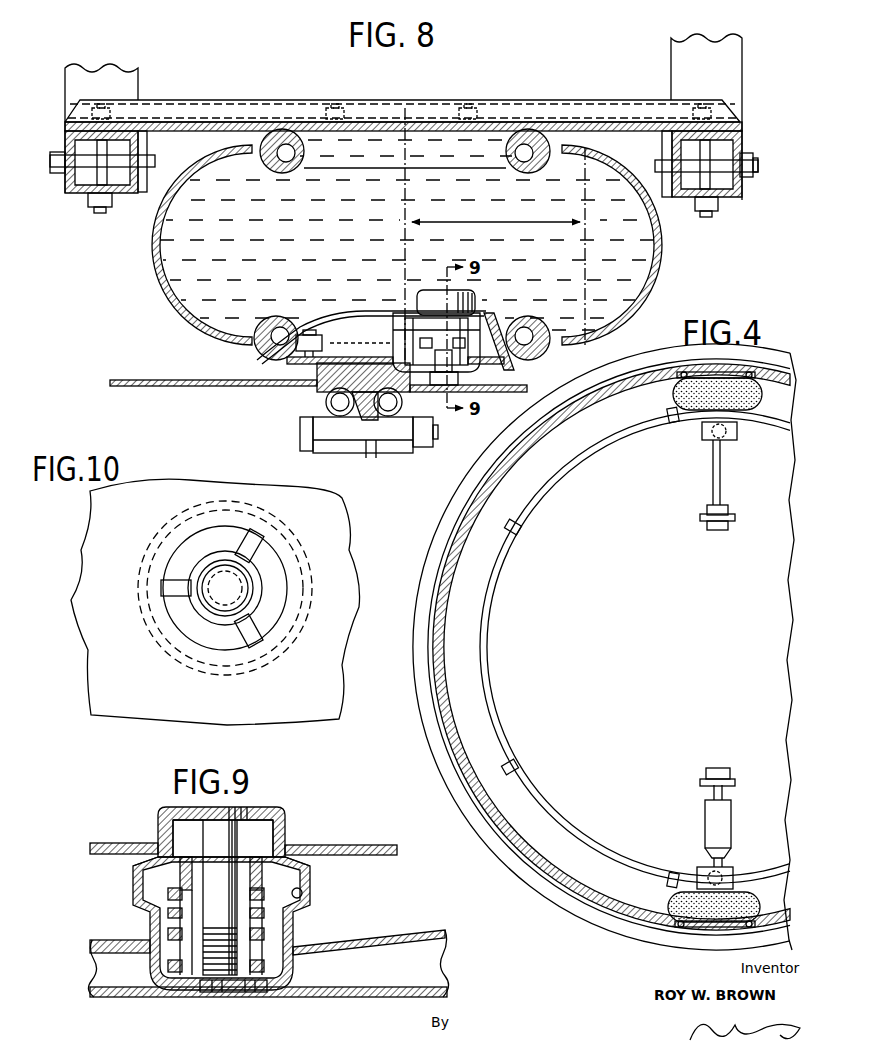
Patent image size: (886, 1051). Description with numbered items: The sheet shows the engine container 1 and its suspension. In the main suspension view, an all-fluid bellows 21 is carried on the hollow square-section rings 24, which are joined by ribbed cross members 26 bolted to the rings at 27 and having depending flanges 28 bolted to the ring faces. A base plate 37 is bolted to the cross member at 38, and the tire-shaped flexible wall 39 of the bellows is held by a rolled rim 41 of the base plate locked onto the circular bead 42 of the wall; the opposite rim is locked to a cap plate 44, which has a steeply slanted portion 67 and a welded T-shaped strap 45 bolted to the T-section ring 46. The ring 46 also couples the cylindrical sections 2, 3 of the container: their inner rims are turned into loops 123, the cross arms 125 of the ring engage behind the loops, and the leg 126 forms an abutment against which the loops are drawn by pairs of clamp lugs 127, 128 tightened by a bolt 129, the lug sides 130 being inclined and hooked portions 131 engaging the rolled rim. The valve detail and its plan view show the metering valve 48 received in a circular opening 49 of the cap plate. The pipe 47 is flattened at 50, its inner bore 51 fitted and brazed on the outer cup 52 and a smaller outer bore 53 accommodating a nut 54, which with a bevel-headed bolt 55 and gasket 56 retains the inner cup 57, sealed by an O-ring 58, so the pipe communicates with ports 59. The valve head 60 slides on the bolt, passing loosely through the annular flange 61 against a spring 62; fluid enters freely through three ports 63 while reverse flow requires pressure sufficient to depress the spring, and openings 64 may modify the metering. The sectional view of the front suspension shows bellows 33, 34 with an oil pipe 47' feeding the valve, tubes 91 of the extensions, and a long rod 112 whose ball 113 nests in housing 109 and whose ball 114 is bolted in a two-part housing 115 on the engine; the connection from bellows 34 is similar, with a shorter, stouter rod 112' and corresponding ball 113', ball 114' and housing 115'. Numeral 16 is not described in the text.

In FIG. 4, the container 1 is at (584, 919).
In FIG. 8, the cylindrical section 2 is at (190, 380).
In FIG. 4, the cylindrical section 2 is at (533, 864).
In FIG. 8, the cylindrical section 3 is at (518, 386).
In FIG. 4, the tread band 16 is at (566, 895).
In FIG. 8, the all-fluid bellows 21 is at (426, 235).
In FIG. 8, the rings 24 is at (65, 131).
In FIG. 8, the cross members 26 is at (280, 106).
In FIG. 8, the bolting of cross members 27 is at (120, 112).
In FIG. 8, the depending flanges 28 is at (148, 150).
In FIG. 4, the bellows 33 is at (760, 404).
In FIG. 4, the bellows 34 is at (669, 906).
In FIG. 8, the base plate 37 is at (398, 120).
In FIG. 8, the bolting of base plate 38 is at (341, 107).
In FIG. 8, the flexible wall 39 is at (660, 272).
In FIG. 8, the rolled rim 41 is at (550, 160).
In FIG. 8, the circular bead 42 is at (546, 142).
In FIG. 8, the cap plate 44 is at (356, 311).
In FIG. 9, the cap plate 44 is at (371, 850).
In FIG. 8, the T-shaped strap 45 is at (357, 356).
In FIG. 8, the T-section ring 46 is at (316, 379).
In FIG. 9, the pipe 47 is at (278, 953).
In FIG. 4, the oil pipe 47' is at (635, 647).
In FIG. 8, the metering valve 48 is at (480, 297).
In FIG. 9, the metering valve 48 is at (285, 809).
In FIG. 9, the circular opening 49 is at (286, 849).
In FIG. 9, the flattened portion 50 is at (371, 940).
In FIG. 9, the inner bore 51 is at (297, 941).
In FIG. 8, the outer cup 52 is at (479, 361).
In FIG. 10, the outer cup 52 is at (158, 645).
In FIG. 9, the outer cup 52 is at (300, 912).
In FIG. 9, the outer bore 53 is at (264, 991).
In FIG. 8, the nut 54 is at (470, 390).
In FIG. 9, the nut 54 is at (222, 994).
In FIG. 10, the bevel-headed bolt 55 is at (241, 579).
In FIG. 9, the bevel-headed bolt 55 is at (246, 812).
In FIG. 9, the gasket 56 is at (258, 996).
In FIG. 8, the inner cup 57 is at (422, 301).
In FIG. 10, the inner cup 57 is at (265, 541).
In FIG. 9, the inner cup 57 is at (158, 829).
In FIG. 9, the O-ring 58 is at (303, 896).
In FIG. 8, the ports 59 is at (442, 336).
In FIG. 9, the ports 59 is at (148, 967).
In FIG. 9, the valve head 60 is at (252, 856).
In FIG. 9, the annular flange 61 is at (180, 856).
In FIG. 9, the spring 62 is at (170, 924).
In FIG. 10, the ports 63 is at (189, 547).
In FIG. 9, the ports 63 is at (284, 834).
In FIG. 9, the openings 64 is at (205, 854).
In FIG. 8, the steeply slanted portion 67 is at (498, 318).
In FIG. 4, the tubes 91 is at (754, 923).
In FIG. 4, the housing 109 is at (738, 434).
In FIG. 4, the long rod 112 is at (738, 472).
In FIG. 4, the rod 112' is at (739, 826).
In FIG. 4, the ball 113 is at (702, 440).
In FIG. 4, the ball 113' is at (698, 876).
In FIG. 4, the ball 114 is at (739, 508).
In FIG. 4, the ball 114' is at (738, 757).
In FIG. 4, the two-part housing 115 is at (739, 518).
In FIG. 4, the two-part housing 115' is at (736, 769).
In FIG. 8, the loops 123 is at (328, 410).
In FIG. 8, the cross arms 125 is at (300, 360).
In FIG. 8, the leg 126 is at (360, 419).
In FIG. 8, the clamp lug 127 is at (331, 453).
In FIG. 8, the clamp lug 128 is at (418, 450).
In FIG. 8, the bolt 129 is at (300, 437).
In FIG. 8, the sides of lugs 130 is at (371, 457).
In FIG. 8, the hooked portions 131 is at (326, 402).